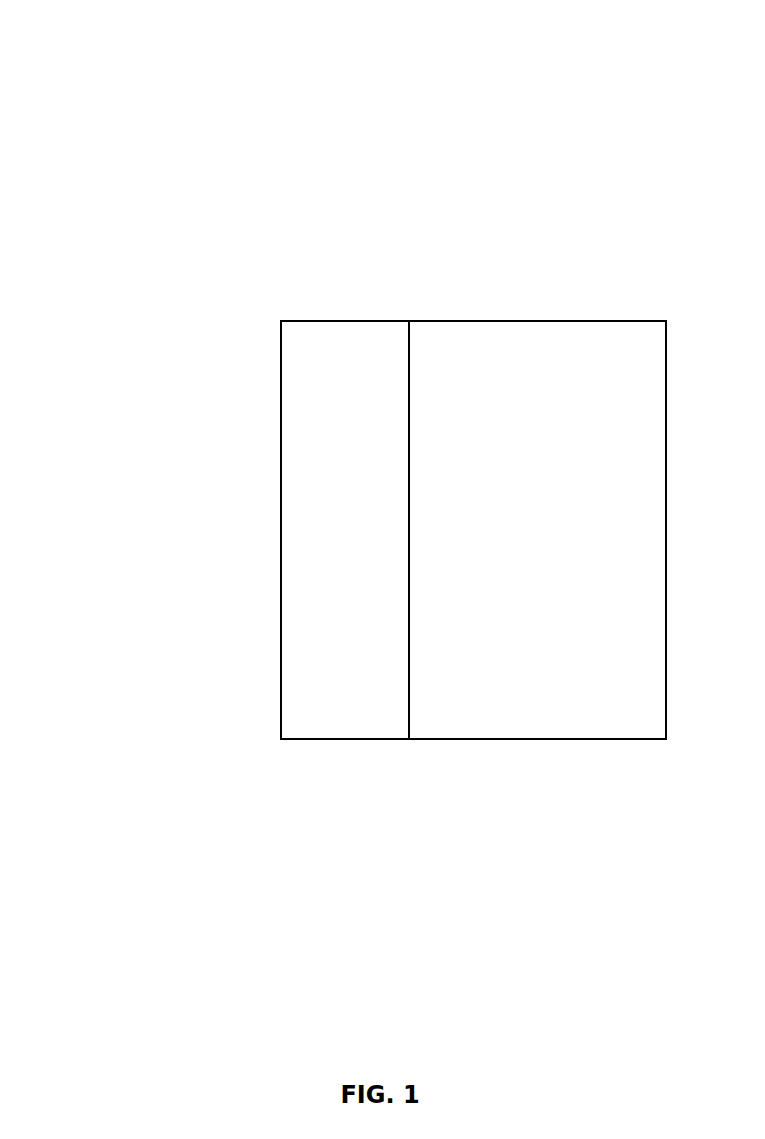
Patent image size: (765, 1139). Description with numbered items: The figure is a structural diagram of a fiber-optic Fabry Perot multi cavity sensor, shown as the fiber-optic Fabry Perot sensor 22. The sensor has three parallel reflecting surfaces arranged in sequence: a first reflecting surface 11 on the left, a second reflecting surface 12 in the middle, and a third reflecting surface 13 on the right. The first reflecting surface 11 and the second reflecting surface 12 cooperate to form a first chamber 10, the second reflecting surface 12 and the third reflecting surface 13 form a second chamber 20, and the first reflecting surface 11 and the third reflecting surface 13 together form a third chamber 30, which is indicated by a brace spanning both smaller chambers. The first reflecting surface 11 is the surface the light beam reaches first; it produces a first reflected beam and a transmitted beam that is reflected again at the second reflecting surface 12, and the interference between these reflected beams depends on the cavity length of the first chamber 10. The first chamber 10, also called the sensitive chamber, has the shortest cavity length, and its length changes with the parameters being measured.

The first chamber 10 is at (345, 498).
The second chamber 20 is at (546, 483).
The third chamber 30 is at (664, 163).
The fiber-optic Fabry Perot sensor 22 is at (178, 272).
The first reflecting surface 11 is at (281, 669).
The second reflecting surface 12 is at (409, 669).
The third reflecting surface 13 is at (666, 669).